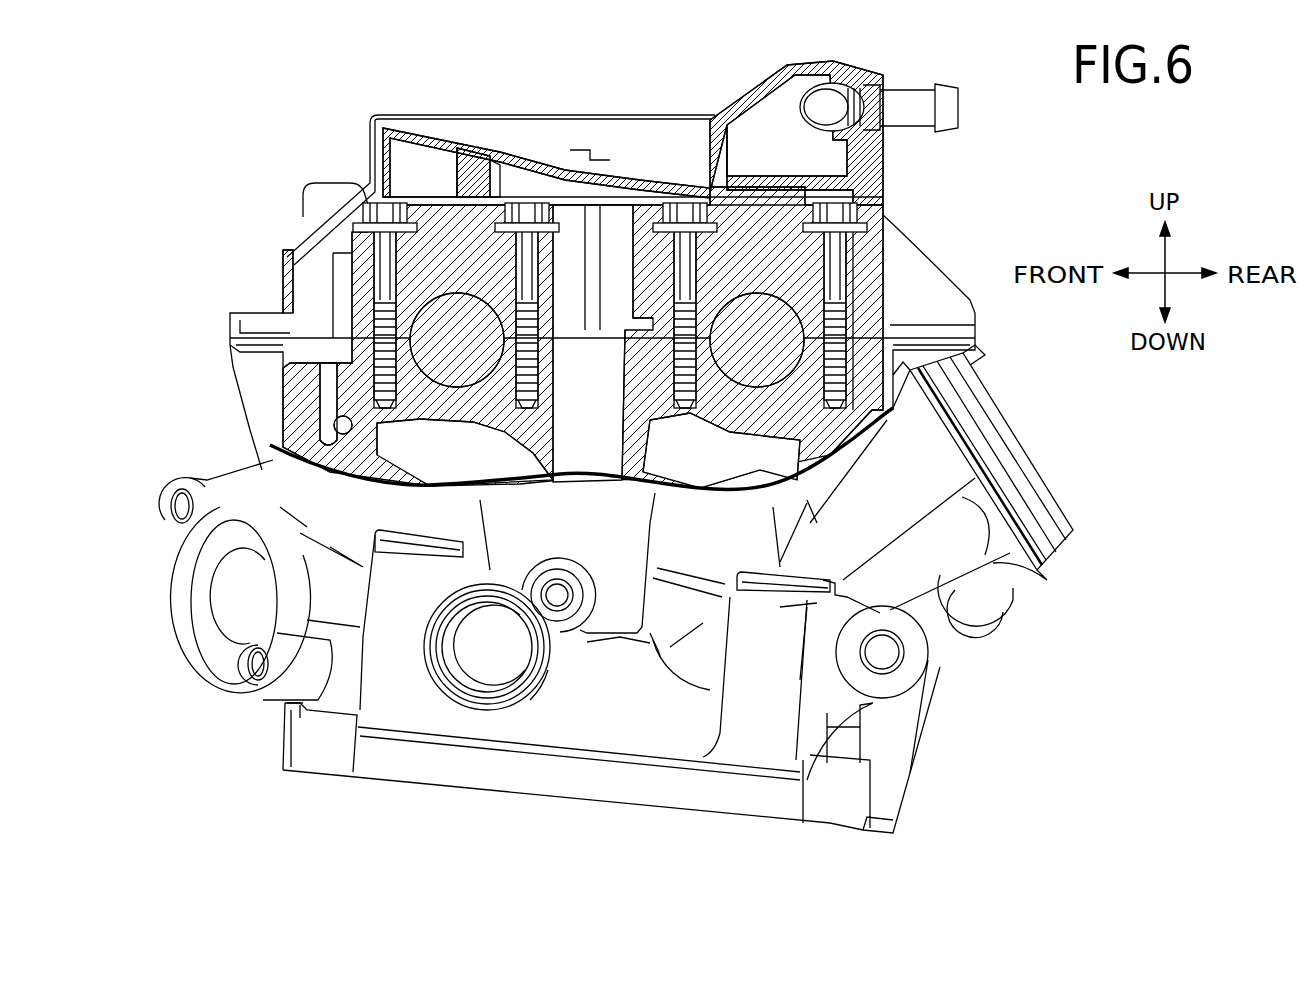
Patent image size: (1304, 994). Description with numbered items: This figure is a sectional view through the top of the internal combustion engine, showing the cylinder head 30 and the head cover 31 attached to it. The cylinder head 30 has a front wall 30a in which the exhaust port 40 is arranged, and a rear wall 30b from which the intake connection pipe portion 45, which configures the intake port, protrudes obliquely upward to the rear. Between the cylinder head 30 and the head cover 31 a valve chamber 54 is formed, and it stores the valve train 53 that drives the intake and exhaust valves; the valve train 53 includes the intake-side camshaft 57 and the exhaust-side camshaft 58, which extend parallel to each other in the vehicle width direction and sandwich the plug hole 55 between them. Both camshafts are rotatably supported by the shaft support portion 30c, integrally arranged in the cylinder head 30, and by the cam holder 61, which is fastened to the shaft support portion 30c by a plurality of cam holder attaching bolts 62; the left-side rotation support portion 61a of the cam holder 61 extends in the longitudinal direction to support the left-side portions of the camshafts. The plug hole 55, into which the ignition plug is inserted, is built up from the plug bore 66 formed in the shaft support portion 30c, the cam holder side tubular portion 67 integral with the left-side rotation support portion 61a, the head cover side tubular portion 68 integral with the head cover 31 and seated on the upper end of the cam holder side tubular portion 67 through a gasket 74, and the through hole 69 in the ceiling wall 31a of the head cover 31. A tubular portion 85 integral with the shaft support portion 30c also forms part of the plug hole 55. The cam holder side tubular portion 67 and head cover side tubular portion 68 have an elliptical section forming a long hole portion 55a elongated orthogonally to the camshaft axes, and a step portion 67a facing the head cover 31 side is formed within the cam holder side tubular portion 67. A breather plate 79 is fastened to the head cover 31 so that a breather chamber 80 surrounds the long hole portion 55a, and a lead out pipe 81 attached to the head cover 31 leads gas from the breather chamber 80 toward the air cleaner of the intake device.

The cylinder head 30 is at (553, 722).
The front wall 30a is at (270, 433).
The rear wall 30b is at (912, 397).
The shaft support portion 30c is at (790, 387).
The head cover 31 is at (320, 210).
The ceiling wall 31a is at (462, 132).
The exhaust port 40 is at (233, 600).
The intake connection pipe portion 45 is at (940, 573).
The valve train 53 is at (797, 302).
The valve chamber 54 is at (307, 293).
The plug hole 55 is at (585, 391).
The long hole portion 55a is at (720, 193).
The intake-side camshaft 57 is at (718, 460).
The exhaust-side camshaft 58 is at (447, 532).
The cam holder 61 is at (447, 212).
The left-side rotation support portion 61a is at (855, 242).
The cam holder attaching bolt 62 is at (375, 212).
The plug bore 66 is at (617, 468).
The cam holder side tubular portion 67 is at (743, 223).
The step portion 67a is at (637, 270).
The head cover side tubular portion 68 is at (493, 200).
The through hole 69 is at (603, 150).
The gasket 74 is at (487, 200).
The breather plate 79 is at (790, 258).
The breather chamber 80 is at (397, 175).
The lead out pipe 81 is at (915, 92).
The tubular portion 85 is at (657, 370).